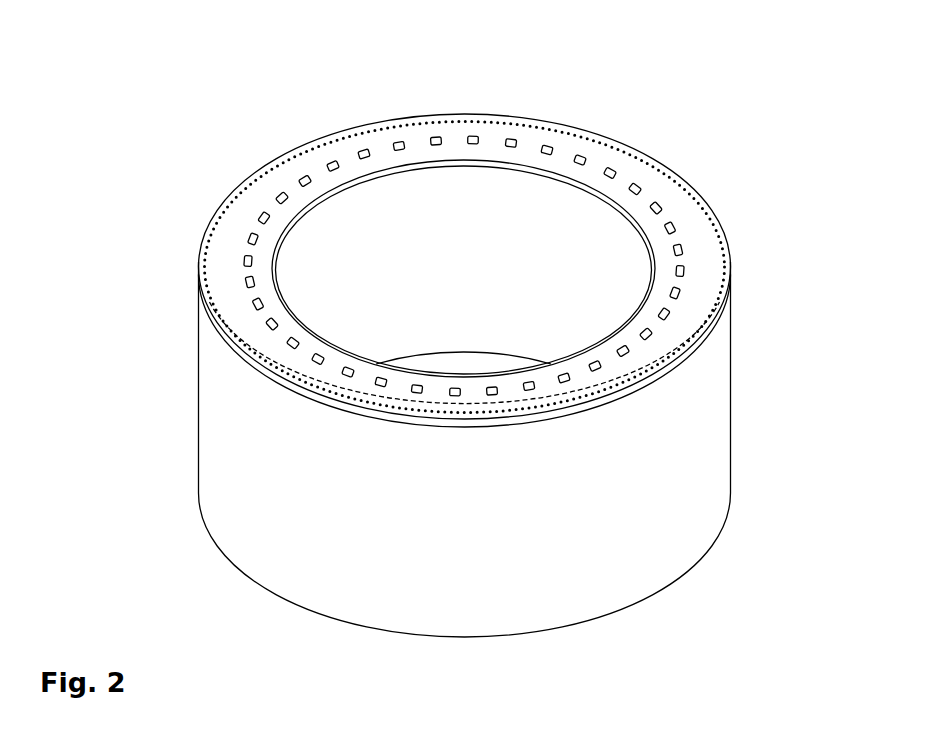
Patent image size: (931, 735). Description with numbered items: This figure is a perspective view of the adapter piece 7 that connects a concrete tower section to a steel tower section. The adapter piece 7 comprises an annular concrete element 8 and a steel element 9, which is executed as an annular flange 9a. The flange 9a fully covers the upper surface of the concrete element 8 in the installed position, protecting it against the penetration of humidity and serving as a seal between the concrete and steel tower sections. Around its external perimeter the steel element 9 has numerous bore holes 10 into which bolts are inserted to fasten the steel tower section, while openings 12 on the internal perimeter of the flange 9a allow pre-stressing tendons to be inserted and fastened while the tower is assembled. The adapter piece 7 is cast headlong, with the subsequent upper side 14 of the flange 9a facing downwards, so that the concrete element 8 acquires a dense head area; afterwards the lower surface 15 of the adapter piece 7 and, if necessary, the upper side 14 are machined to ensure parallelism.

The adapter piece 7 is at (232, 168).
The annular concrete element 8 is at (238, 472).
The steel element 9 is at (320, 158).
The annular flange 9a is at (463, 268).
The bore holes 10 is at (537, 127).
The openings 12 is at (465, 214).
The upper side 14 is at (496, 239).
The lower surface 15 is at (485, 594).